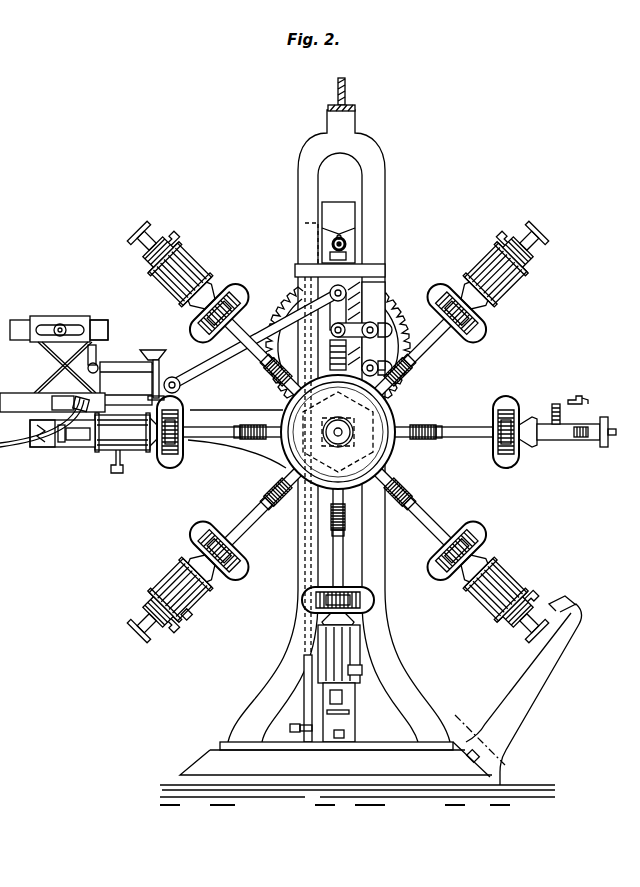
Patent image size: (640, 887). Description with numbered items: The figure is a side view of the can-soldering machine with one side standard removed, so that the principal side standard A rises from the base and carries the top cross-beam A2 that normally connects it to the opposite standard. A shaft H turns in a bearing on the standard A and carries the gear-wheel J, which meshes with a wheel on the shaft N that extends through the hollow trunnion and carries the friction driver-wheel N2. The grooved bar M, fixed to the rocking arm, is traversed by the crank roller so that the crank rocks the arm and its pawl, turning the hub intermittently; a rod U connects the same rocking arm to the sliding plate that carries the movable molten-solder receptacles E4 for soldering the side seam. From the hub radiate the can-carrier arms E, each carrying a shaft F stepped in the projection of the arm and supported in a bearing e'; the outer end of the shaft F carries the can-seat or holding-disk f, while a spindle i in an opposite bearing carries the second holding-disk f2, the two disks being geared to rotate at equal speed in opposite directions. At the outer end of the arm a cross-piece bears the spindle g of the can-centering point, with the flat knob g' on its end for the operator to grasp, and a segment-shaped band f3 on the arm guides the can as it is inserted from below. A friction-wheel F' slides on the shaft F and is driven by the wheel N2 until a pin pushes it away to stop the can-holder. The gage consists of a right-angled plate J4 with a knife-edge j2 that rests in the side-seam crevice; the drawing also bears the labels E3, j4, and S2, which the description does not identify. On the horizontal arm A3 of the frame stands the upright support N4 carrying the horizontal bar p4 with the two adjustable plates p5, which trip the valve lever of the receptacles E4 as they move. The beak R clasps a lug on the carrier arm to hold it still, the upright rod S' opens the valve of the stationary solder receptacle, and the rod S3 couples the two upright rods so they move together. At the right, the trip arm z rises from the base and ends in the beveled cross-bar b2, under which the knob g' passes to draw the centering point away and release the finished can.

The principal side standard A is at (305, 189).
The top cross-beam A2 is at (350, 94).
The horizontal arm of the frame A3 is at (240, 410).
The slide block S is at (338, 232).
The pin T is at (346, 244).
The gear-wheel J is at (403, 288).
The grooved bar M is at (361, 329).
The shaft F is at (377, 383).
The rod U is at (255, 339).
The radial arm E is at (452, 342).
The slotted head E3 is at (451, 293).
The movable molten-solder receptacle E4 is at (123, 417).
The bearing e' is at (356, 443).
The right-angled plate J4 is at (490, 263).
The can-seat or holding-disk f is at (241, 297).
The can-seat or holding-disk f2 is at (555, 414).
The segment-shaped band f3 is at (204, 598).
The friction-wheel F' is at (308, 458).
The shaft N is at (338, 438).
The friction-wheel N2 is at (396, 411).
The upright stud or support N4 is at (56, 368).
The spindle i is at (507, 461).
The spindle g is at (380, 528).
The flat knob or circular plate g' is at (618, 433).
The clip j4 is at (574, 396).
The knife-edge j2 is at (580, 402).
The shaft H is at (54, 322).
The sliding plates p5 is at (41, 318).
The horizontal bar p4 is at (102, 320).
The beak or notched block R is at (44, 447).
The pipe v is at (42, 432).
The funnel S2 is at (157, 363).
The upright rod S' is at (277, 509).
The rod S3 is at (290, 728).
The trip arm z is at (535, 675).
The cross-bar b2 is at (570, 598).